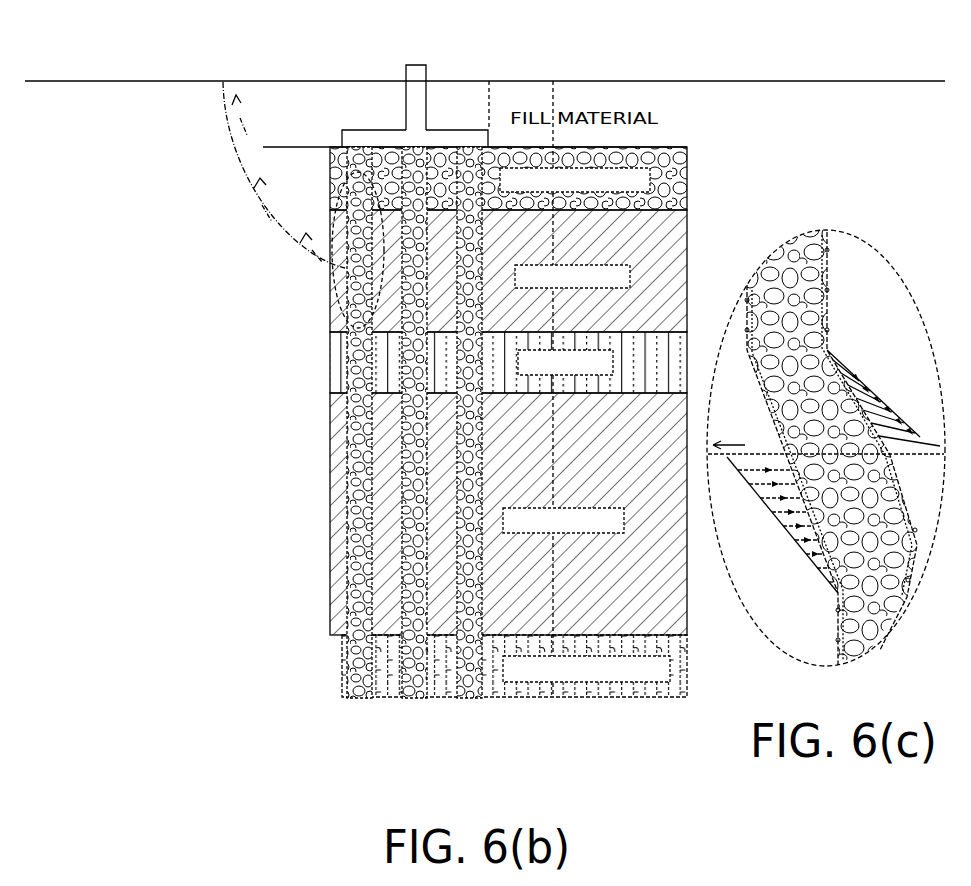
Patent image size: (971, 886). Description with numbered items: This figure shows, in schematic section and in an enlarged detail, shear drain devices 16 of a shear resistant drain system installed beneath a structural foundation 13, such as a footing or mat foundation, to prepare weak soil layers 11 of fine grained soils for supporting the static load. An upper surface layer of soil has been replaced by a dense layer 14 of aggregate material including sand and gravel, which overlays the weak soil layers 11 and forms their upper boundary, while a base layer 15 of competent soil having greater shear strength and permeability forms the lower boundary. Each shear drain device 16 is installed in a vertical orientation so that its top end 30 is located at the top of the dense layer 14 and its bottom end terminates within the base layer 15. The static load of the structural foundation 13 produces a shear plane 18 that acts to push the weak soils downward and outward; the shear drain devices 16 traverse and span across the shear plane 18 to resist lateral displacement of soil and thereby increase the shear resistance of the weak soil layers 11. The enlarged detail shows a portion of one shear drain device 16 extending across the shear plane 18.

In FIG. 6B, the weak soil layers 11 is at (113, 640).
In FIG. 6B, the structural foundation 13 is at (435, 64).
In FIG. 6B, the dense layer 14 is at (122, 143).
In FIG. 6B, the base layer 15 is at (113, 708).
In FIG. 6B, the shear drain devices 16 is at (460, 608).
In FIG. 6C, the shear drain devices 16 is at (832, 447).
In FIG. 6B, the shear plane 18 is at (238, 157).
In FIG. 6C, the shear plane 18 is at (833, 471).
In FIG. 6B, the top end 30 is at (338, 215).